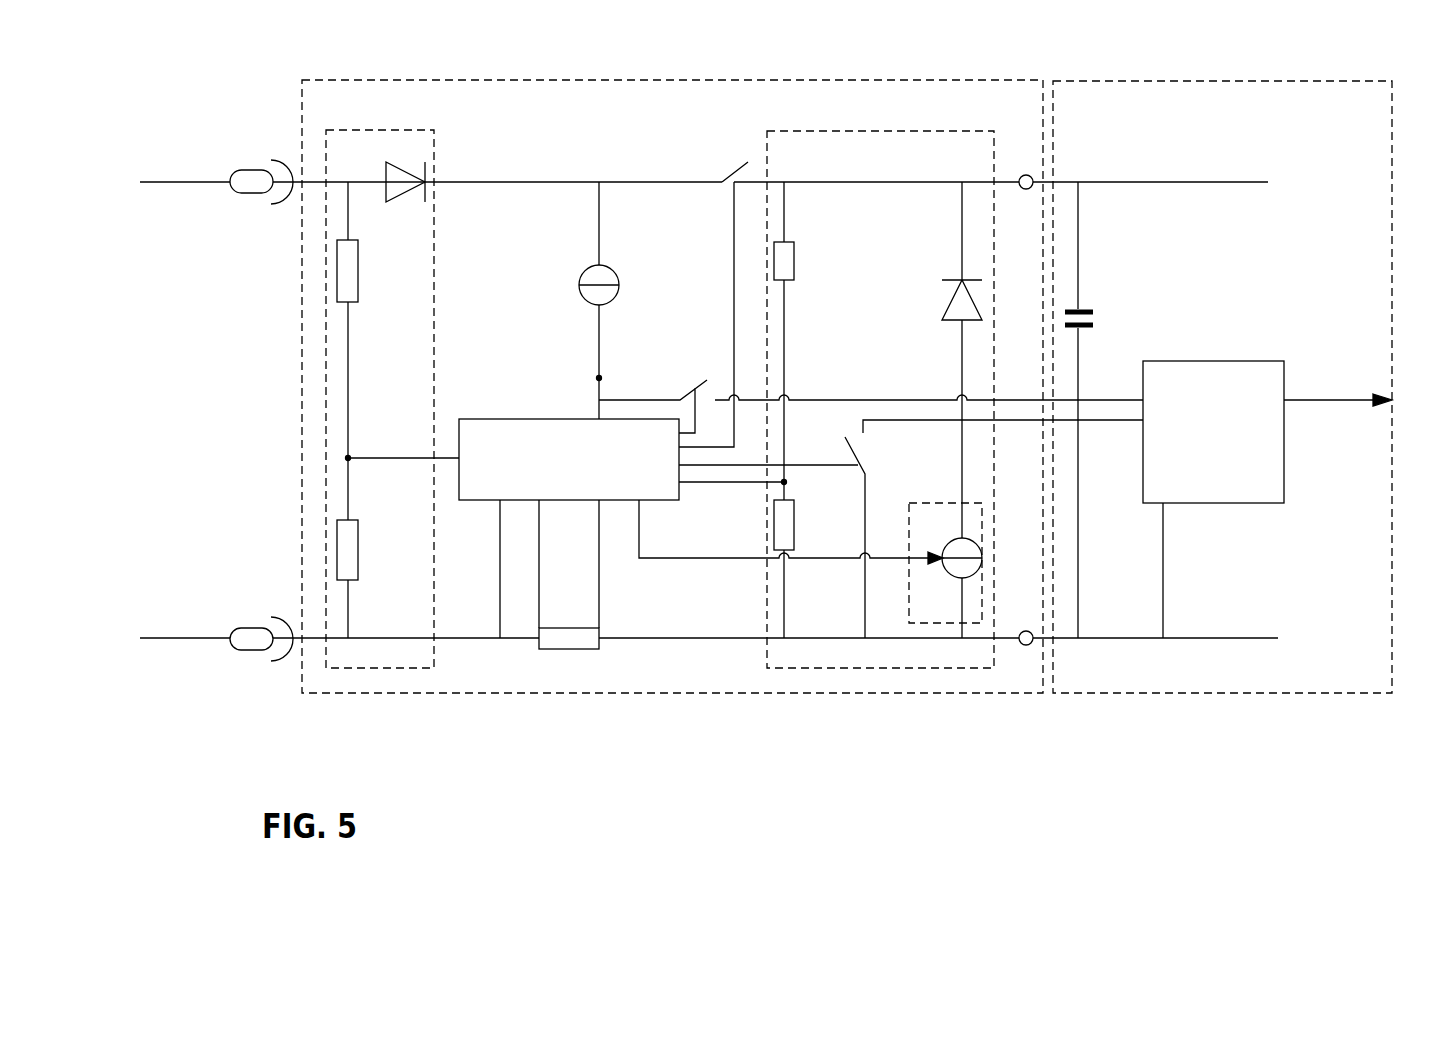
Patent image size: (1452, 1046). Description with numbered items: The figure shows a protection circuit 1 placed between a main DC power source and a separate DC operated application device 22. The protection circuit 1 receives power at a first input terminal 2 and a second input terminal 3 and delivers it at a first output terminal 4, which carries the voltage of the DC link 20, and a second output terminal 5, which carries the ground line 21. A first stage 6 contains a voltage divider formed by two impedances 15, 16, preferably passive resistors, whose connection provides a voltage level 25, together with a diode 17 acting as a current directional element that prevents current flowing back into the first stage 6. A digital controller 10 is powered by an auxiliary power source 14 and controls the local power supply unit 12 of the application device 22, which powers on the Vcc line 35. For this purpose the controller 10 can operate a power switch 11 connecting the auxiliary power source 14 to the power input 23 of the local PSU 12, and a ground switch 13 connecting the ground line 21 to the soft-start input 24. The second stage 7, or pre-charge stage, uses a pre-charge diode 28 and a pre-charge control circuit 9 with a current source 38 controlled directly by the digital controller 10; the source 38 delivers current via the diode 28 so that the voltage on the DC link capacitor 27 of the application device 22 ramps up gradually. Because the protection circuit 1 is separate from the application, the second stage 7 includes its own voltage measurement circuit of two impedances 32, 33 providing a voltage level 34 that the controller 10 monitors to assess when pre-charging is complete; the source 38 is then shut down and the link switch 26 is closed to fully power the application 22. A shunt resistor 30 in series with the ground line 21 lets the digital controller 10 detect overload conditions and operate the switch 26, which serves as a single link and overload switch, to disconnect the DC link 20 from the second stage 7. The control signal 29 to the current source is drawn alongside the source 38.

The protection circuit 1 is at (672, 376).
The first input terminal 2 is at (261, 172).
The second input terminal 3 is at (261, 628).
The first output terminal 4 is at (1026, 170).
The second output terminal 5 is at (1026, 626).
The first stage 6 is at (380, 389).
The second stage 7 is at (880, 389).
The pre-charge control circuit 9 is at (945, 563).
The digital controller 10 is at (569, 528).
The power switch 11 is at (658, 395).
The local power supply unit 12 is at (1213, 499).
The ground switch 13 is at (772, 536).
The auxiliary power source 14 is at (587, 300).
The impedance 15 is at (360, 320).
The impedance 16 is at (360, 548).
The diode 17 is at (405, 174).
The DC link 20 is at (704, 167).
The ground line 21 is at (709, 628).
The application device 22 is at (1222, 374).
The power input 23 is at (943, 391).
The soft-start input 24 is at (1017, 428).
The voltage level 25 is at (403, 446).
The link switch 26 is at (713, 296).
The DC link capacitor 27 is at (1091, 410).
The pre-charge diode 28 is at (948, 360).
The control signal line 29 is at (791, 544).
The shunt resistor 30 is at (569, 651).
The impedance 32 is at (796, 341).
The impedance 33 is at (797, 569).
The voltage level 34 is at (745, 486).
The Vcc line 35 is at (1356, 388).
The current source 38 is at (955, 582).